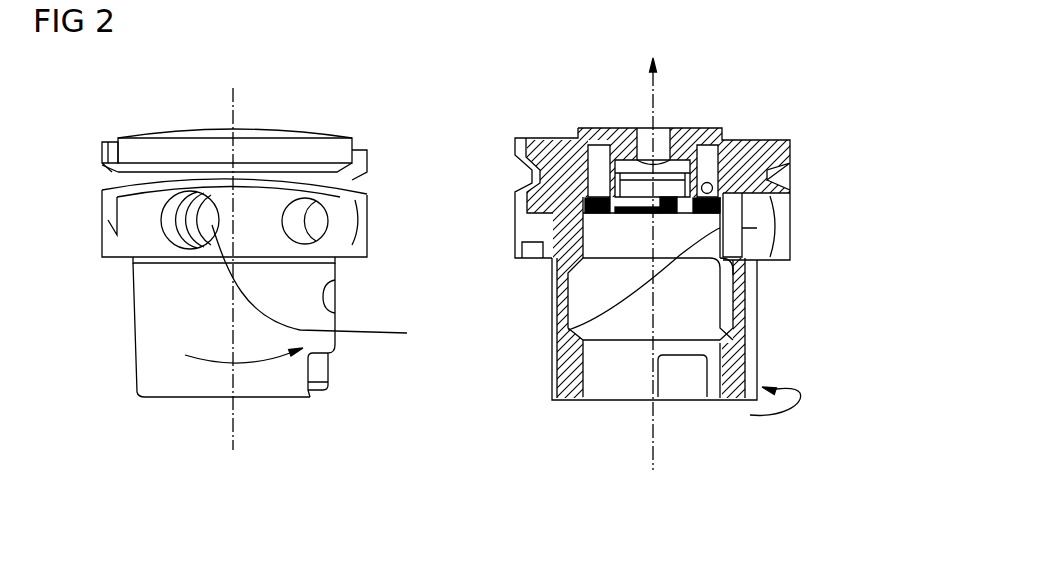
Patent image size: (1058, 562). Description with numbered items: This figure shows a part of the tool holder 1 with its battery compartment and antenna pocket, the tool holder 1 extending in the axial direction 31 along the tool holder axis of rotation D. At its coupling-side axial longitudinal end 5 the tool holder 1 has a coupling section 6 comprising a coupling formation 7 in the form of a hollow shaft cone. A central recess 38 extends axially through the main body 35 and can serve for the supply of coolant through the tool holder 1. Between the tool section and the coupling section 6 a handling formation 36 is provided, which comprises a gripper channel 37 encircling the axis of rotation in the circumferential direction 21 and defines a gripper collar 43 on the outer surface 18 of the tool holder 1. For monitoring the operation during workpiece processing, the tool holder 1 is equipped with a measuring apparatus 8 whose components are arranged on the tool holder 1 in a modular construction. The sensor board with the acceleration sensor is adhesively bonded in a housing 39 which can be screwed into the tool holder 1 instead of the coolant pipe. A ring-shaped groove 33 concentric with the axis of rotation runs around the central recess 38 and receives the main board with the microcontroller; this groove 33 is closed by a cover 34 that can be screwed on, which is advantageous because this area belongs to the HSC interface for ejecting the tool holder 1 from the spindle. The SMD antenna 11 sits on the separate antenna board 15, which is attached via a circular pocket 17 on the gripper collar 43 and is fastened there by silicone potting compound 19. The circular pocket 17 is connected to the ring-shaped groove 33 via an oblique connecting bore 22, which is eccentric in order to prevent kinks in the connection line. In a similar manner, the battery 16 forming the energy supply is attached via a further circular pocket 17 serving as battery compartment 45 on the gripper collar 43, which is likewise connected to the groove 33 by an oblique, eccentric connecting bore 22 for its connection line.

The tool holder 1 is at (461, 81).
The coupling-side axial longitudinal end 5 is at (110, 367).
The coupling section 6 is at (278, 387).
The coupling formation 7 is at (240, 421).
The measuring apparatus 8 is at (104, 112).
The SMD antenna 11 is at (347, 249).
The antenna board 15 is at (533, 222).
The battery 16 is at (568, 330).
The circular pocket 17 is at (347, 249).
The outer surface 18 is at (350, 247).
The potting compound 19 is at (347, 249).
The circumferential direction 21 is at (308, 378).
The connecting bore 22 is at (517, 187).
The axial direction 31 is at (236, 108).
The ring-shaped groove 33 is at (545, 153).
The cover 34 is at (607, 240).
The main body 35 is at (448, 271).
The handling formation 36 is at (95, 287).
The gripper channel 37 is at (367, 180).
The central recess 38 is at (628, 113).
The housing 39 is at (675, 140).
The gripper collar 43 is at (102, 158).
The battery compartment 45 is at (466, 286).